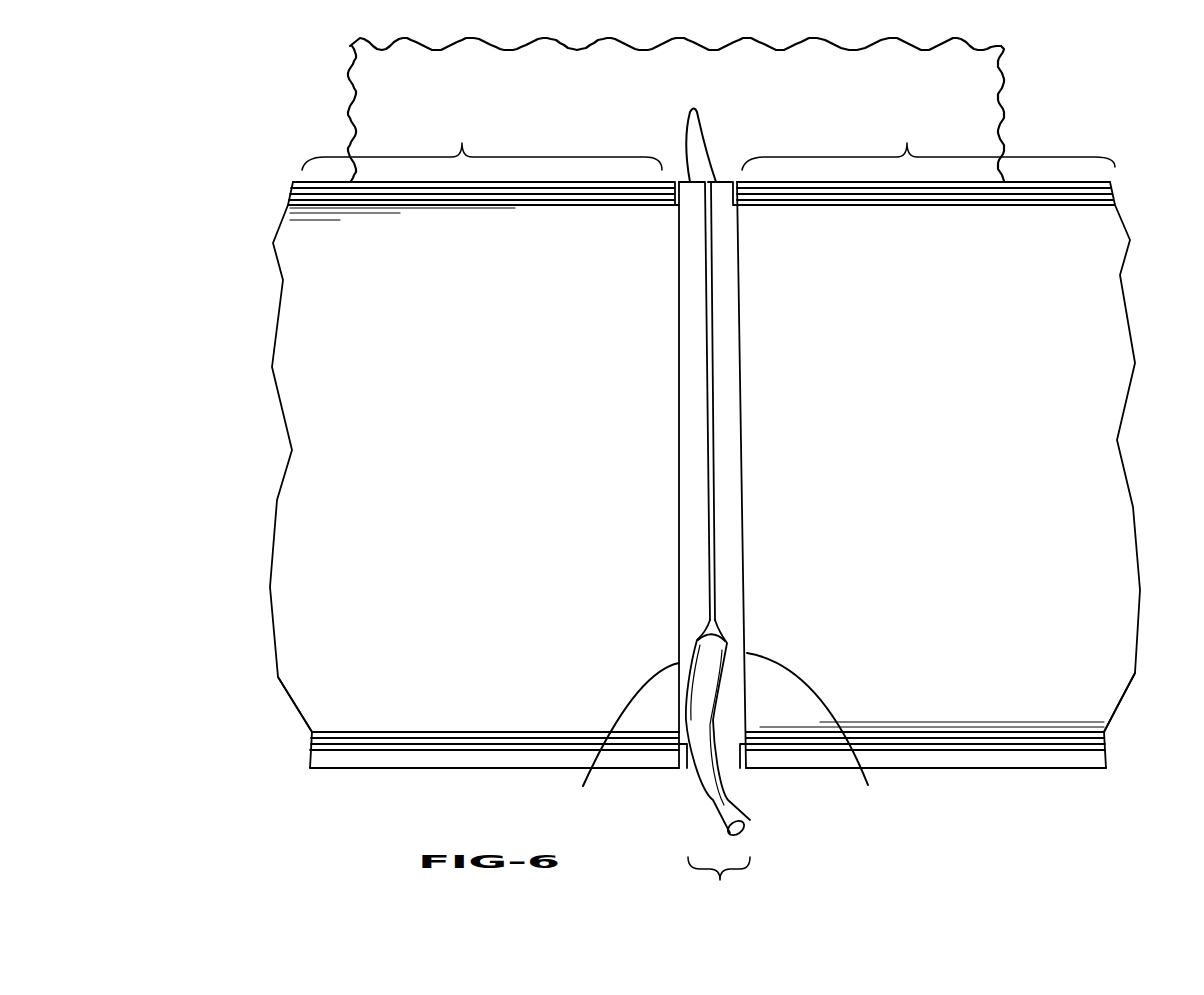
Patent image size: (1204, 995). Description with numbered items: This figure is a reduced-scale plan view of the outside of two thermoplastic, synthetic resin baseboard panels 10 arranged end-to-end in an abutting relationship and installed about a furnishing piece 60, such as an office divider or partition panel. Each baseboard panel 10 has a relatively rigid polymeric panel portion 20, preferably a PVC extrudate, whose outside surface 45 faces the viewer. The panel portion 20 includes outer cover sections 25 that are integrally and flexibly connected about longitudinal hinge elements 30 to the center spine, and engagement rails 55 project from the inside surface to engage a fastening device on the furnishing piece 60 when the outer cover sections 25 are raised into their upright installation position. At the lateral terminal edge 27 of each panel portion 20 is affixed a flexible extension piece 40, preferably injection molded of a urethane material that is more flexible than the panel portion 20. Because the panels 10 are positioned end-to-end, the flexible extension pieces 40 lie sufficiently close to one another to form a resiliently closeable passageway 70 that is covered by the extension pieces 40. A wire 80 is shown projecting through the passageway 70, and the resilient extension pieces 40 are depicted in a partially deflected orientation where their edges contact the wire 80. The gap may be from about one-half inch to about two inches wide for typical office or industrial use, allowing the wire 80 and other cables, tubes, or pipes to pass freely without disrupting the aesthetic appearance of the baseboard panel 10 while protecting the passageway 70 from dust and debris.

The baseboard panel 10 is at (262, 343).
The panel portion 20 is at (708, 140).
The outer cover sections 25 is at (280, 690).
The lateral terminal edge 27 is at (731, 731).
The hinge elements 30 is at (350, 768).
The flexible extension piece 40 is at (701, 134).
The outside surface 45 is at (478, 479).
The engagement rails 55 is at (318, 180).
The furnishing piece 60 is at (1006, 69).
The passageway 70 is at (719, 887).
The wire 80 is at (741, 790).